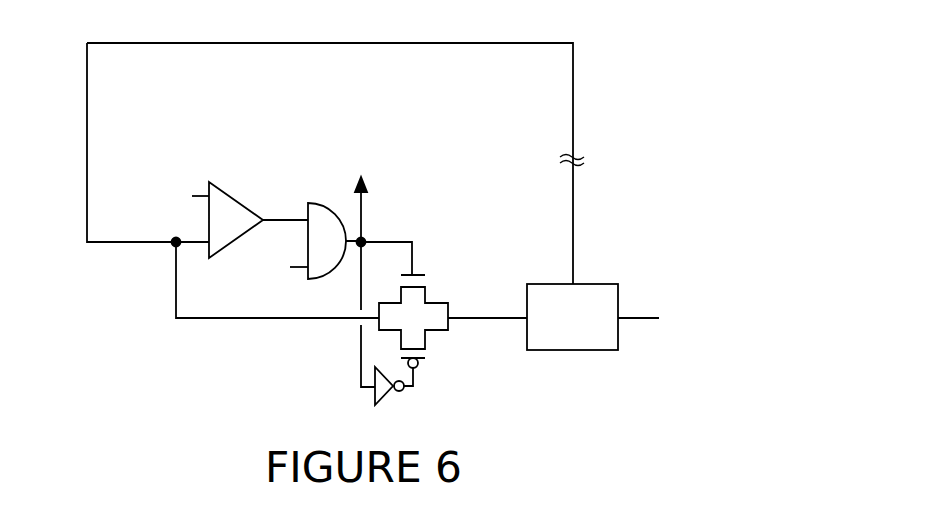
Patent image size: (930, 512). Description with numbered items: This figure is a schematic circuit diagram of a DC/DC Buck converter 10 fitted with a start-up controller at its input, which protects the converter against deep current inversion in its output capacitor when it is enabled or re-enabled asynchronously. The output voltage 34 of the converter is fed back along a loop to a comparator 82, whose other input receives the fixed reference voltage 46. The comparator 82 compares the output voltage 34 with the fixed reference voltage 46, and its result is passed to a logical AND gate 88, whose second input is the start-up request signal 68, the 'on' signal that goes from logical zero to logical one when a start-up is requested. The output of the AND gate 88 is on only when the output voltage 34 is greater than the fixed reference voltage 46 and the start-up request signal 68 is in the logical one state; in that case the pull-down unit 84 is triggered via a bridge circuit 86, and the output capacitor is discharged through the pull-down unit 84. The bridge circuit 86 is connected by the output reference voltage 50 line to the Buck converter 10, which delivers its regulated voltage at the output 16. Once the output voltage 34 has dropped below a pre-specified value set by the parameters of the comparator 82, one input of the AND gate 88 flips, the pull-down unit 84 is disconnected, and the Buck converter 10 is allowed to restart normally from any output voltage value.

The output voltage 34 is at (335, 169).
The comparator 82 is at (258, 220).
The fixed reference voltage 46 is at (187, 198).
The logical AND gate 88 is at (337, 241).
The start-up request signal 68 is at (287, 266).
The pull-down unit 84 is at (361, 198).
The bridge circuit 86 is at (404, 323).
The output reference voltage 50 is at (487, 308).
The DC/DC Buck converter 10 is at (572, 317).
The output 16 is at (640, 318).